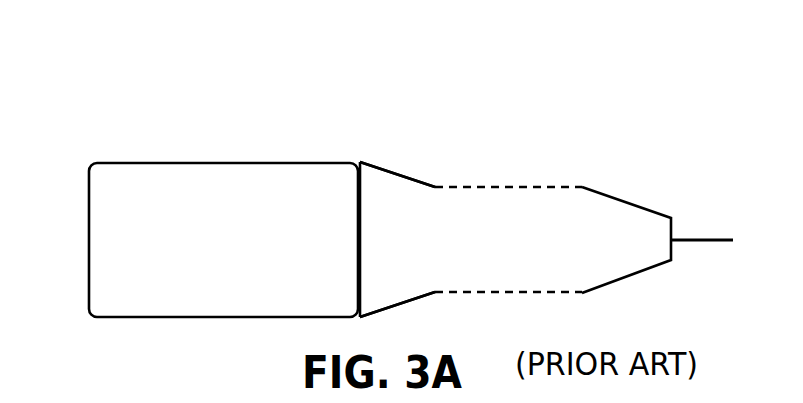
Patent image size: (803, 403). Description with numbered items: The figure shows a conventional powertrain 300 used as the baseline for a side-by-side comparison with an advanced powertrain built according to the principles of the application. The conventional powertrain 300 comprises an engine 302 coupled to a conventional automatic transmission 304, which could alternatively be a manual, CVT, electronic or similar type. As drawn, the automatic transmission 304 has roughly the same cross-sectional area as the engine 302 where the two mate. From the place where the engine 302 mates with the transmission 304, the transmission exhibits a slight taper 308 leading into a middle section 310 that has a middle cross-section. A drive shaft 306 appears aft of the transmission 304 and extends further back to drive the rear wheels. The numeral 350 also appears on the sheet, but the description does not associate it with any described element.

The conventional powertrain 300 is at (124, 94).
The engine 302 is at (203, 163).
The conventional automatic transmission 304 is at (568, 223).
The drive shaft 306 is at (723, 238).
The slight taper 308 is at (390, 170).
The middle section 310 is at (491, 187).
The sheet reference 350 is at (34, 392).